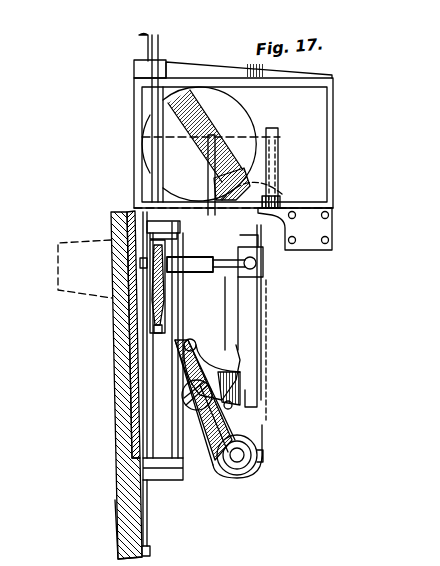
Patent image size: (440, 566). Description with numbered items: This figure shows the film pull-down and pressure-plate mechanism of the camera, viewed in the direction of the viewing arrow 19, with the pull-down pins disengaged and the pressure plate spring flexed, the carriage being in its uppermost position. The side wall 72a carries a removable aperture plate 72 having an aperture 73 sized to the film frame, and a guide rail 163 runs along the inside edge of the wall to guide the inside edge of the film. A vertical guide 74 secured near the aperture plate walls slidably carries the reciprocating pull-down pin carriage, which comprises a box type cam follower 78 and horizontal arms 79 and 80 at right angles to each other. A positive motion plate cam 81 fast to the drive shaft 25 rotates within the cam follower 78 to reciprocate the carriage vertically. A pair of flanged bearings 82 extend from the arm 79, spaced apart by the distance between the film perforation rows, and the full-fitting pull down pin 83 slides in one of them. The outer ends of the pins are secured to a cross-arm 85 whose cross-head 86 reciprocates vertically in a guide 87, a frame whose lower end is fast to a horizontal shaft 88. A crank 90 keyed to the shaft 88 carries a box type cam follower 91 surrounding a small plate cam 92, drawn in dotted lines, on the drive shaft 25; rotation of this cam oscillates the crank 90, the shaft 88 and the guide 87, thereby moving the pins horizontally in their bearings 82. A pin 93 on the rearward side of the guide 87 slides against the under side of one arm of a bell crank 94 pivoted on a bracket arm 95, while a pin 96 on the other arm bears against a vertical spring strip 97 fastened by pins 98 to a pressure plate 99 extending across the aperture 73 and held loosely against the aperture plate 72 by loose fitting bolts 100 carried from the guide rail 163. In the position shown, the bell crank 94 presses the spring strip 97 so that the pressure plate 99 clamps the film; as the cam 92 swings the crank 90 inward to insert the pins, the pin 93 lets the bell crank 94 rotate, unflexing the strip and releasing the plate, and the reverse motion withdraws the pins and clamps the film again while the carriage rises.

The viewing direction arrow 19 is at (348, 294).
The drive shaft 25 is at (262, 152).
The removable aperture plate 72 is at (125, 446).
The side wall 72a is at (122, 518).
The aperture 73 is at (112, 390).
The vertical guide 74 is at (152, 48).
The box type cam follower 78 is at (333, 110).
The horizontal arm 79 is at (170, 314).
The horizontal arm 80 is at (96, 300).
The positive motion plate cam 81 is at (247, 108).
The flanged bearings 82 is at (198, 272).
The pull down pin 83 is at (232, 292).
The cross-arm 85 is at (258, 265).
The cross-head 86 is at (258, 283).
The guide 87 is at (262, 338).
The horizontal shaft 88 is at (240, 458).
The crank 90 is at (265, 424).
The box type cam follower 91 is at (280, 160).
The small plate cam 92 is at (265, 184).
The pin 93 is at (240, 403).
The bell crank 94 is at (200, 366).
The bracket arm 95 is at (200, 436).
The pin 96 is at (192, 339).
The spring strip 97 is at (175, 470).
The pins 98 is at (144, 213).
The pressure plate 99 is at (143, 425).
The loose fitting bolts 100 is at (141, 478).
The guide rail 163 is at (152, 550).